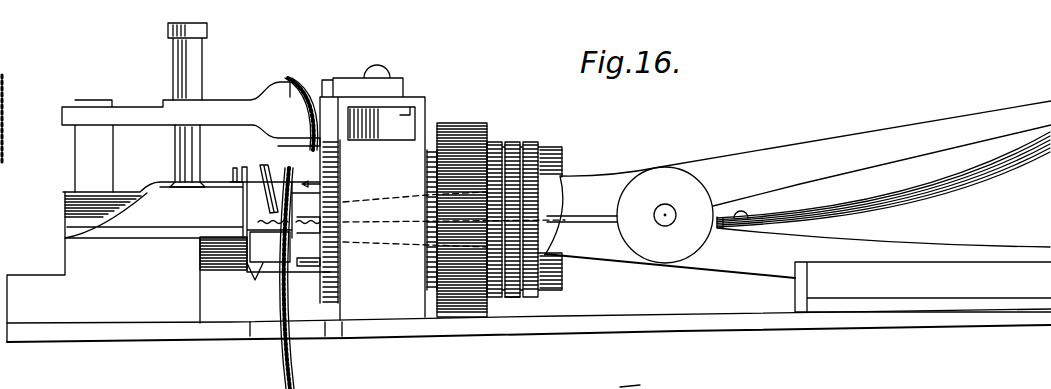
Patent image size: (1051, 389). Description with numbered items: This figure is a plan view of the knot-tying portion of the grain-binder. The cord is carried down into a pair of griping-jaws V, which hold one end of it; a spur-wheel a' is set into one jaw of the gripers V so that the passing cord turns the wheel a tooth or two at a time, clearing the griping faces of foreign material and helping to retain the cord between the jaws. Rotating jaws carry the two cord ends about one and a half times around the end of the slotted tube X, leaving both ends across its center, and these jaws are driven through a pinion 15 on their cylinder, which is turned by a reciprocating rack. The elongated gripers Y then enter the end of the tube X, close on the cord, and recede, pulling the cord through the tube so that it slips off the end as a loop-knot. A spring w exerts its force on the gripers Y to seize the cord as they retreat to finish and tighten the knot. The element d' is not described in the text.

The griping-jaws V is at (191, 107).
The spur-wheel a' is at (378, 182).
The pinion 15 is at (462, 210).
The elongated gripers Y is at (798, 182).
The support bar d' is at (670, 252).
The spring w is at (883, 189).
The tube X is at (155, 226).